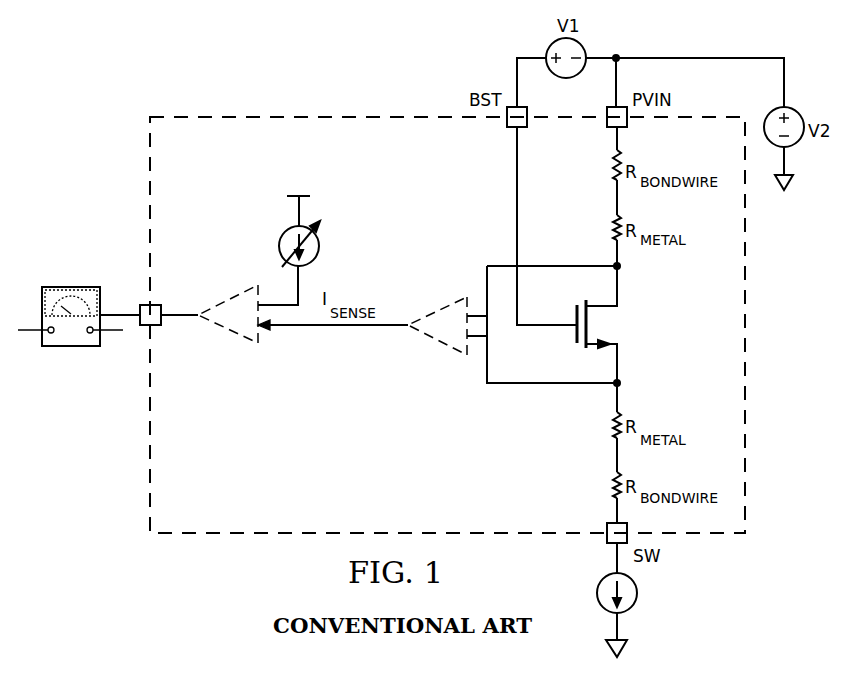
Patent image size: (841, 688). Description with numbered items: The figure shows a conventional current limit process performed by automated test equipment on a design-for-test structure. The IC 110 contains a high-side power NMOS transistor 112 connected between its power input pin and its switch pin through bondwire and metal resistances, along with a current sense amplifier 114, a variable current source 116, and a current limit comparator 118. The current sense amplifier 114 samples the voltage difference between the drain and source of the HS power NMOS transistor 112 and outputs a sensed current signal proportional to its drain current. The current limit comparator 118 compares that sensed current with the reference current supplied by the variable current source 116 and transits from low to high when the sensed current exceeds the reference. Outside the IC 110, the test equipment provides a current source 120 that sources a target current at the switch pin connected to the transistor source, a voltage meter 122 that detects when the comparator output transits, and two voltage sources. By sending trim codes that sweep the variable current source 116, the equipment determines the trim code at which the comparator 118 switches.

The IC 110 is at (224, 113).
The high-side power NMOS transistor 112 is at (576, 333).
The current sense amplifier 114 is at (438, 342).
The variable current source 116 is at (279, 247).
The current limit comparator 118 is at (230, 331).
The current source 120 is at (637, 593).
The voltage meter 122 is at (70, 287).